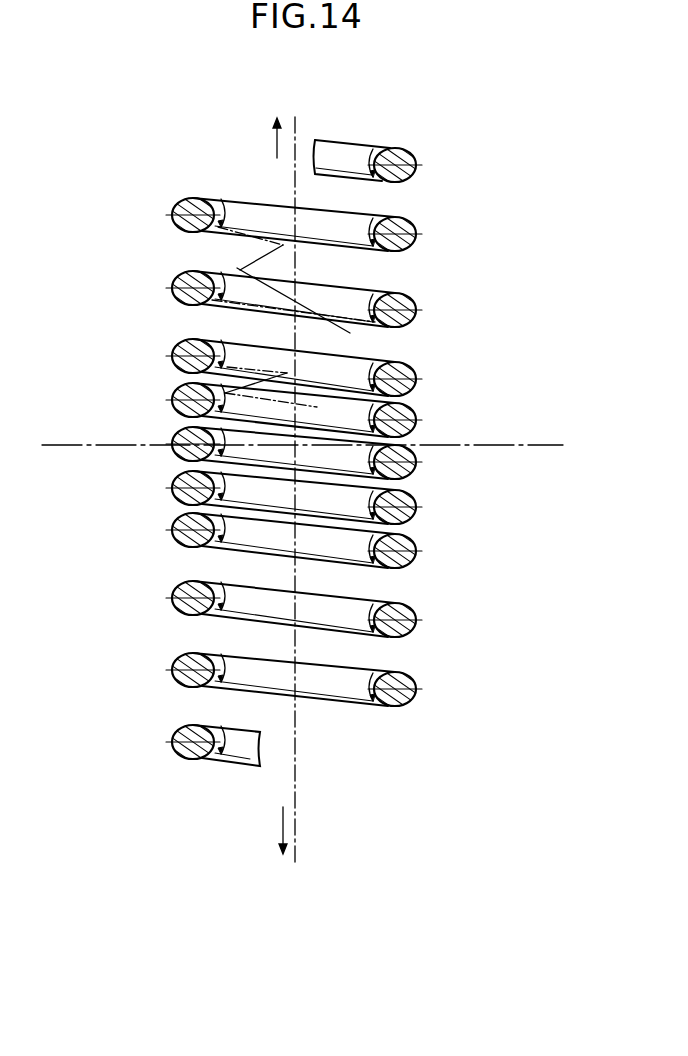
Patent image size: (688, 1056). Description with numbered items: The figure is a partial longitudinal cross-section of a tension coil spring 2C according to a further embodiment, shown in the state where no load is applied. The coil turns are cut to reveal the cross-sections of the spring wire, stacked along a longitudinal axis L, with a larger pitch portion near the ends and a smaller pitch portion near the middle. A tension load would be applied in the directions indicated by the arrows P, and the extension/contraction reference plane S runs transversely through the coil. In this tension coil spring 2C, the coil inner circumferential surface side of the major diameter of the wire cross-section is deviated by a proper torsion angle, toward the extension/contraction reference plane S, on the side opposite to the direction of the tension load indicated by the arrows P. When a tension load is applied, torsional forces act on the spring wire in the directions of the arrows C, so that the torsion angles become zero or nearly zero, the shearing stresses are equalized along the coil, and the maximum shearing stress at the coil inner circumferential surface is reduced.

The tension coil spring 2C is at (462, 278).
The arrows indicating torsional force directions C is at (294, 453).
The load axis L is at (295, 475).
The arrows indicating tension load direction P is at (269, 499).
The extension/contraction reference plane S is at (313, 444).